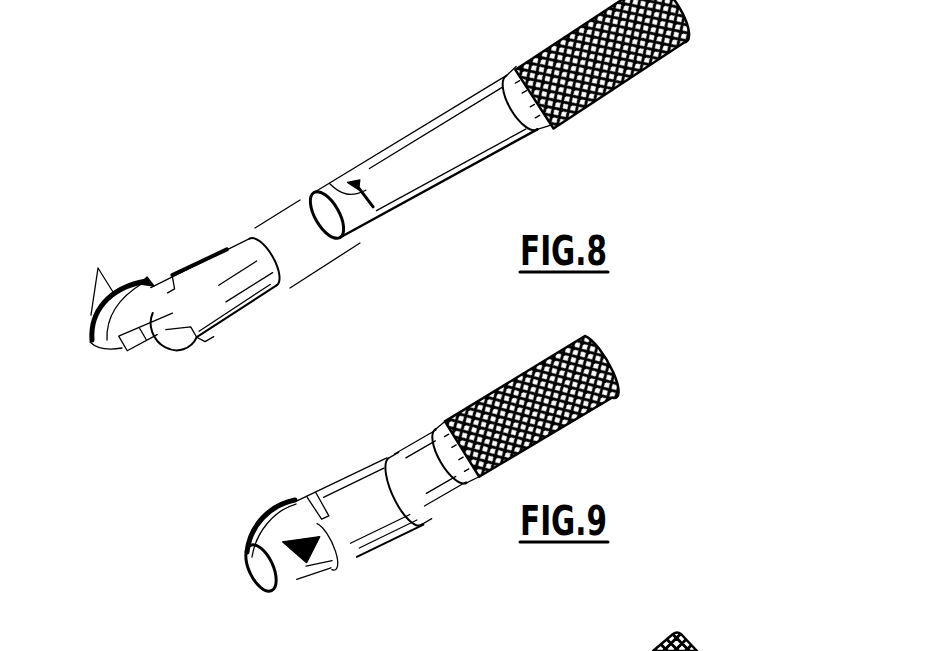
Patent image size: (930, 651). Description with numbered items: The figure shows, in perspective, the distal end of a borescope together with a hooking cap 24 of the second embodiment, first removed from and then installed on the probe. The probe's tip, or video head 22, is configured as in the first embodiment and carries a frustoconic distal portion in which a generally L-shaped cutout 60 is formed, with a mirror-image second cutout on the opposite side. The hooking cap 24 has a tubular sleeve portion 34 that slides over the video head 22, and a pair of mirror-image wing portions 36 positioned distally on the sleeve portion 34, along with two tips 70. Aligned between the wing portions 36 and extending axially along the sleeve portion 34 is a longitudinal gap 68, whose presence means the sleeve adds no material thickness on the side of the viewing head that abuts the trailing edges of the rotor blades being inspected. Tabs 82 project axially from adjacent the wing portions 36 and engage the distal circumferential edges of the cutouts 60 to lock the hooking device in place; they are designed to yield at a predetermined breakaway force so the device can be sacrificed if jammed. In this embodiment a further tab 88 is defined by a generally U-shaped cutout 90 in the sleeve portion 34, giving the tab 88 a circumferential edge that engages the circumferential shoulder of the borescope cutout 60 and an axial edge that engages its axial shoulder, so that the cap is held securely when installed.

In FIG. 8, the video head 22 is at (328, 193).
In FIG. 8, the hooking cap 24 is at (253, 307).
In FIG. 8, the sleeve portion 34 is at (243, 254).
In FIG. 9, the sleeve portion 34 is at (353, 502).
In FIG. 8, the wing portions 36 is at (102, 281).
In FIG. 9, the wing portions 36 is at (287, 507).
In FIG. 8, the L-shaped cutout 60 is at (378, 186).
In FIG. 8, the longitudinal gap 68 is at (214, 248).
In FIG. 8, the tips 70 is at (147, 276).
In FIG. 8, the tabs 82 is at (203, 350).
In FIG. 9, the tabs 82 is at (317, 567).
In FIG. 8, the tab 88 is at (132, 352).
In FIG. 9, the tab 88 is at (287, 588).
In FIG. 8, the U-shaped cutout 90 is at (160, 358).